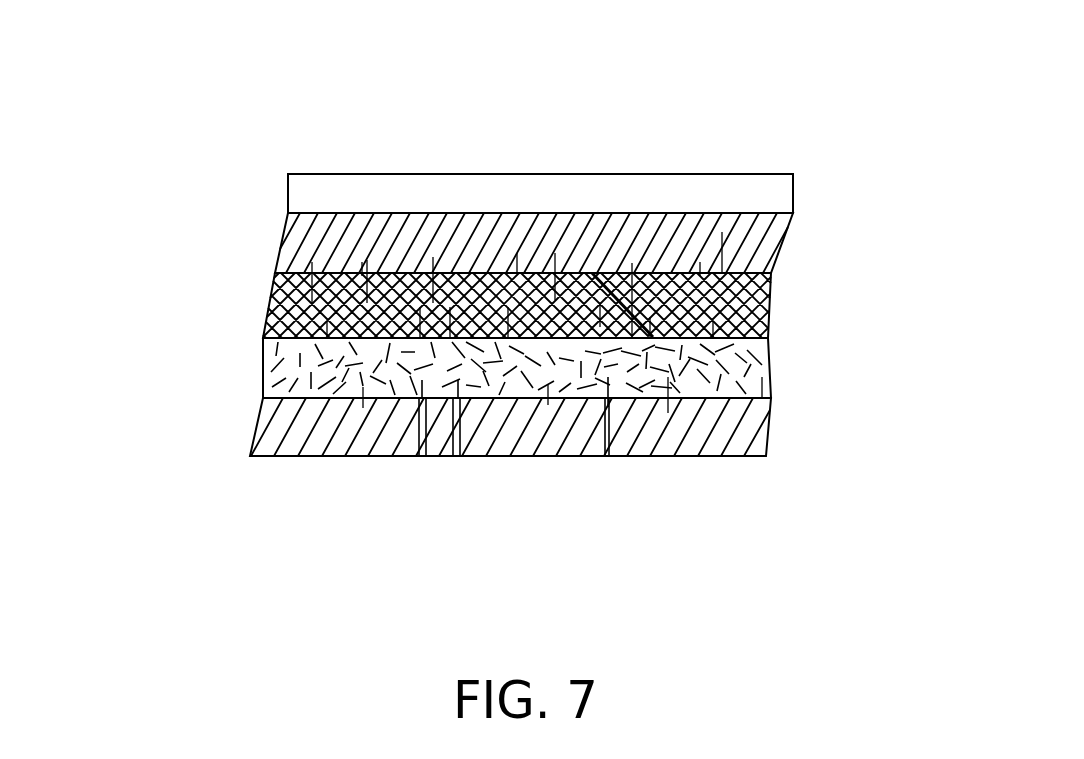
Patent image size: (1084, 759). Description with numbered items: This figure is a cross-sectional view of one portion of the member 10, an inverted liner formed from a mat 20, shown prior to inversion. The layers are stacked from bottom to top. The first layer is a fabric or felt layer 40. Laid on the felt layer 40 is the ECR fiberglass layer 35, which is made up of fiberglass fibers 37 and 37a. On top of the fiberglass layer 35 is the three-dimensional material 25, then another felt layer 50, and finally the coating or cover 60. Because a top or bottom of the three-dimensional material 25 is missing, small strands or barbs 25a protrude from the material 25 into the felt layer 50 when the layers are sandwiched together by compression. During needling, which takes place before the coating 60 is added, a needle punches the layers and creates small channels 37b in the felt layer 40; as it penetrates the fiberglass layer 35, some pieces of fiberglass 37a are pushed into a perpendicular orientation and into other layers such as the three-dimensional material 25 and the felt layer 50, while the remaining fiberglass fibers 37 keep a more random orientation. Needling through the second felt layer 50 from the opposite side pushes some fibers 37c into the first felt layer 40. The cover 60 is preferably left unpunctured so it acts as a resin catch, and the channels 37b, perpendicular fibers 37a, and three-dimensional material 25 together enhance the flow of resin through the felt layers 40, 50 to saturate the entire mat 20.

The member 10 is at (456, 106).
The coating or cover 60 is at (289, 193).
The second felt layer 50 is at (283, 240).
The three-dimensional material 25 is at (263, 303).
The barbs 25a is at (362, 268).
The mat 20 is at (521, 370).
The fiberglass layer 35 is at (775, 368).
The felt layer 40 is at (260, 412).
The fiberglass fibers 37 is at (393, 402).
The fiberglass fibers 37a is at (278, 262).
The channels 37b is at (418, 426).
The fibers 37c is at (362, 405).